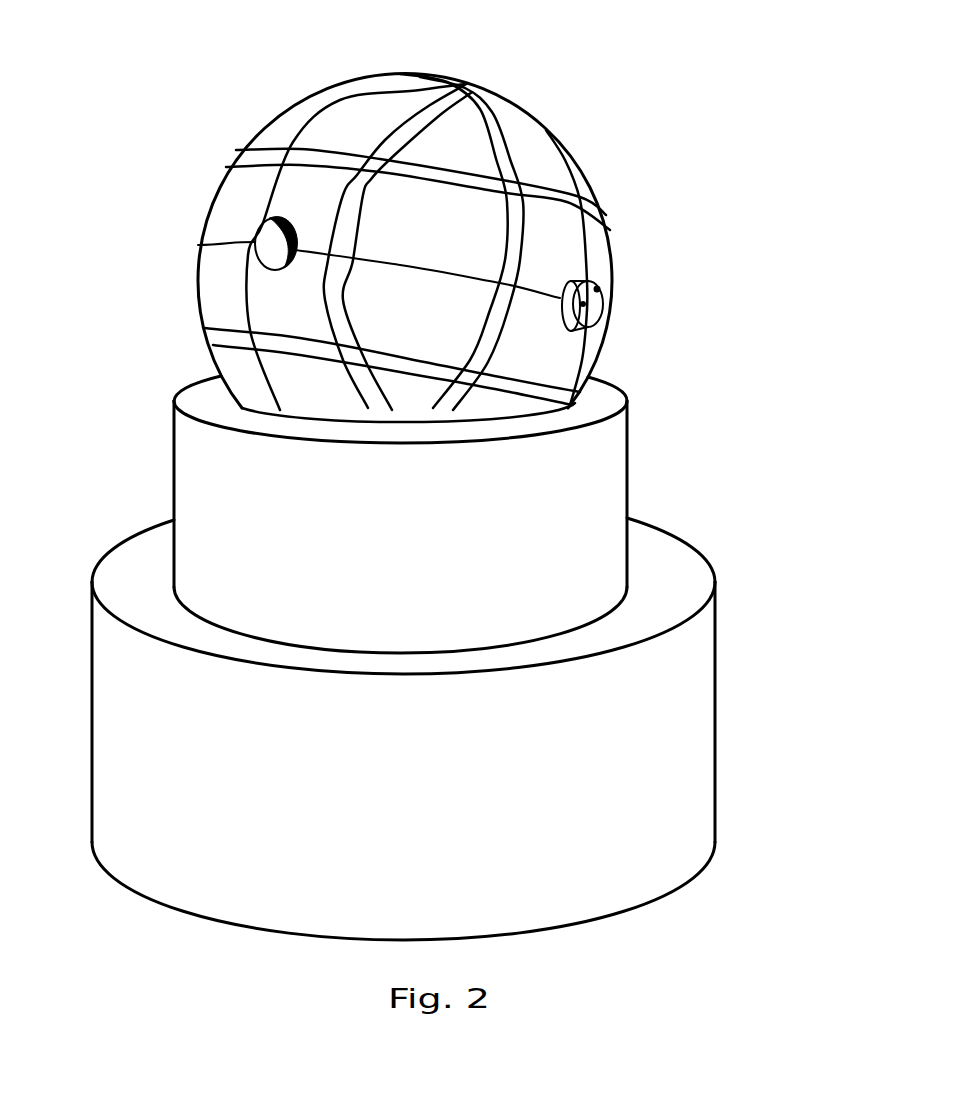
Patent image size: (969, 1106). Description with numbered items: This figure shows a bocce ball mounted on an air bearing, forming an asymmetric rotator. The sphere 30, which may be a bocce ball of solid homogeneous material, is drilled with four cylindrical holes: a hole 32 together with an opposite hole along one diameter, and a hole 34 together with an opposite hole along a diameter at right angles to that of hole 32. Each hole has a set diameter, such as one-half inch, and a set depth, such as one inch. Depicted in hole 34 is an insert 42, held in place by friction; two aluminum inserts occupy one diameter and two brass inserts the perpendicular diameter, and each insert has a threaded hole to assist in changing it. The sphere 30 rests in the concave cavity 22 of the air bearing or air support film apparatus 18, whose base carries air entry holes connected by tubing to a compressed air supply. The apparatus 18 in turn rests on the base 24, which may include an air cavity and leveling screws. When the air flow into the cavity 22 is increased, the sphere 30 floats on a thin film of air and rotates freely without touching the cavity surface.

The air bearing apparatus 18 is at (532, 514).
The concave cavity 22 is at (575, 403).
The base 24 is at (715, 729).
The sphere 30 is at (402, 241).
The hole 32 is at (267, 245).
The hole 34 is at (665, 260).
The insert 42 is at (597, 289).